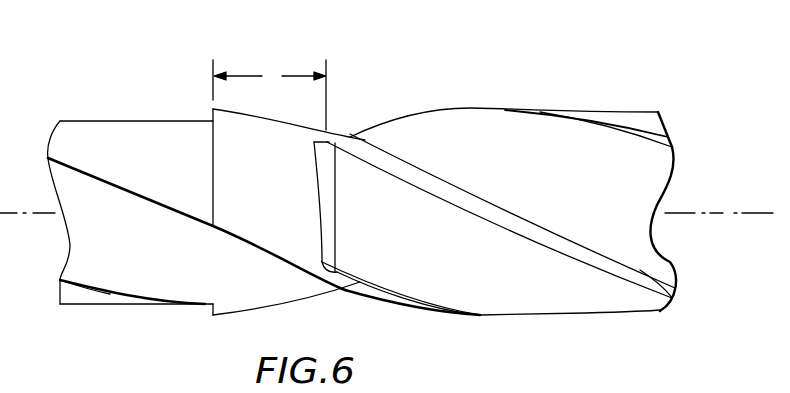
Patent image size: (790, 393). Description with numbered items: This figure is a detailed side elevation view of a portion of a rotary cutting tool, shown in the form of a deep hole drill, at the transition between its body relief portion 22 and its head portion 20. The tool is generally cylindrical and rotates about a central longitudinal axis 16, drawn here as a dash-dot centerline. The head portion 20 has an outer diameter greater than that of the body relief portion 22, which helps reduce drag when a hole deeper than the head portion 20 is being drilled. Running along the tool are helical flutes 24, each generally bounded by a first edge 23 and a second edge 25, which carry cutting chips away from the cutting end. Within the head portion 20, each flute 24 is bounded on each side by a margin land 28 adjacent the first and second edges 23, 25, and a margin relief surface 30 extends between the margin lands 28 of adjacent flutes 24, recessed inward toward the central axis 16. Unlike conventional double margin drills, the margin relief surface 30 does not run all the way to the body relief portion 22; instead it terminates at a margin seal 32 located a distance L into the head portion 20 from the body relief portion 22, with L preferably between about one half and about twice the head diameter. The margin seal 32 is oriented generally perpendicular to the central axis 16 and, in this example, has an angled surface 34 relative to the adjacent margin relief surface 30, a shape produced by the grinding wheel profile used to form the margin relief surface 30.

The central longitudinal axis 16 is at (716, 212).
The head portion 20 is at (216, 55).
The body relief portion 22 is at (214, 54).
The first edge 23 is at (180, 213).
The flute 24 is at (130, 282).
The second edge 25 is at (80, 282).
The margin land 28 is at (452, 188).
The margin relief surface 30 is at (533, 293).
The margin seal 32 is at (318, 168).
The angled surface 34 is at (330, 207).